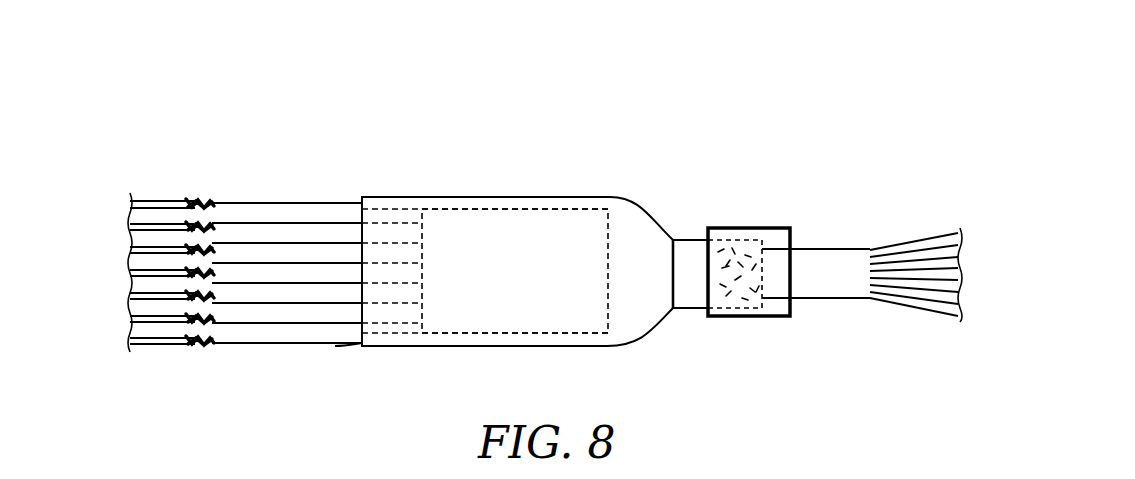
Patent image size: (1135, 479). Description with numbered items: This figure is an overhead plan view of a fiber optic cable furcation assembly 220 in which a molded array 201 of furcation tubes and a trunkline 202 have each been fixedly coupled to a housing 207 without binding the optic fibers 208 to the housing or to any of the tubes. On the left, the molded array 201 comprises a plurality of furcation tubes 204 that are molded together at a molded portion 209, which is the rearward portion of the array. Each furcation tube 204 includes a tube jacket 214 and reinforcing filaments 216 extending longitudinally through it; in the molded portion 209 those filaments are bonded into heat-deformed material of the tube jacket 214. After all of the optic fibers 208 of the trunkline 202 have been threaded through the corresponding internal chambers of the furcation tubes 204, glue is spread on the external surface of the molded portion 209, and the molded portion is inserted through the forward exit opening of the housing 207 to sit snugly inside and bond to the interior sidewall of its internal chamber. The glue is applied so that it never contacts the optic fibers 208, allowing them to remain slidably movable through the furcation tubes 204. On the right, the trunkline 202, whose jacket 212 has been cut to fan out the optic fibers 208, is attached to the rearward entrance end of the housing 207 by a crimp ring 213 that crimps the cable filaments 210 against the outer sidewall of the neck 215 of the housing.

The molded array 201 is at (299, 182).
The trunkline 202 is at (848, 248).
The furcation tubes 204 is at (318, 205).
The housing 207 is at (618, 203).
The optic fibers 208 is at (150, 200).
The molded portion 209 is at (522, 198).
The cable filaments 210 is at (735, 316).
The jacket 212 is at (811, 258).
The crimp ring 213 is at (745, 228).
The tube jacket 214 is at (290, 333).
The neck 215 is at (700, 300).
The reinforcing filaments 216 is at (215, 200).
The furcation assembly 220 is at (446, 140).